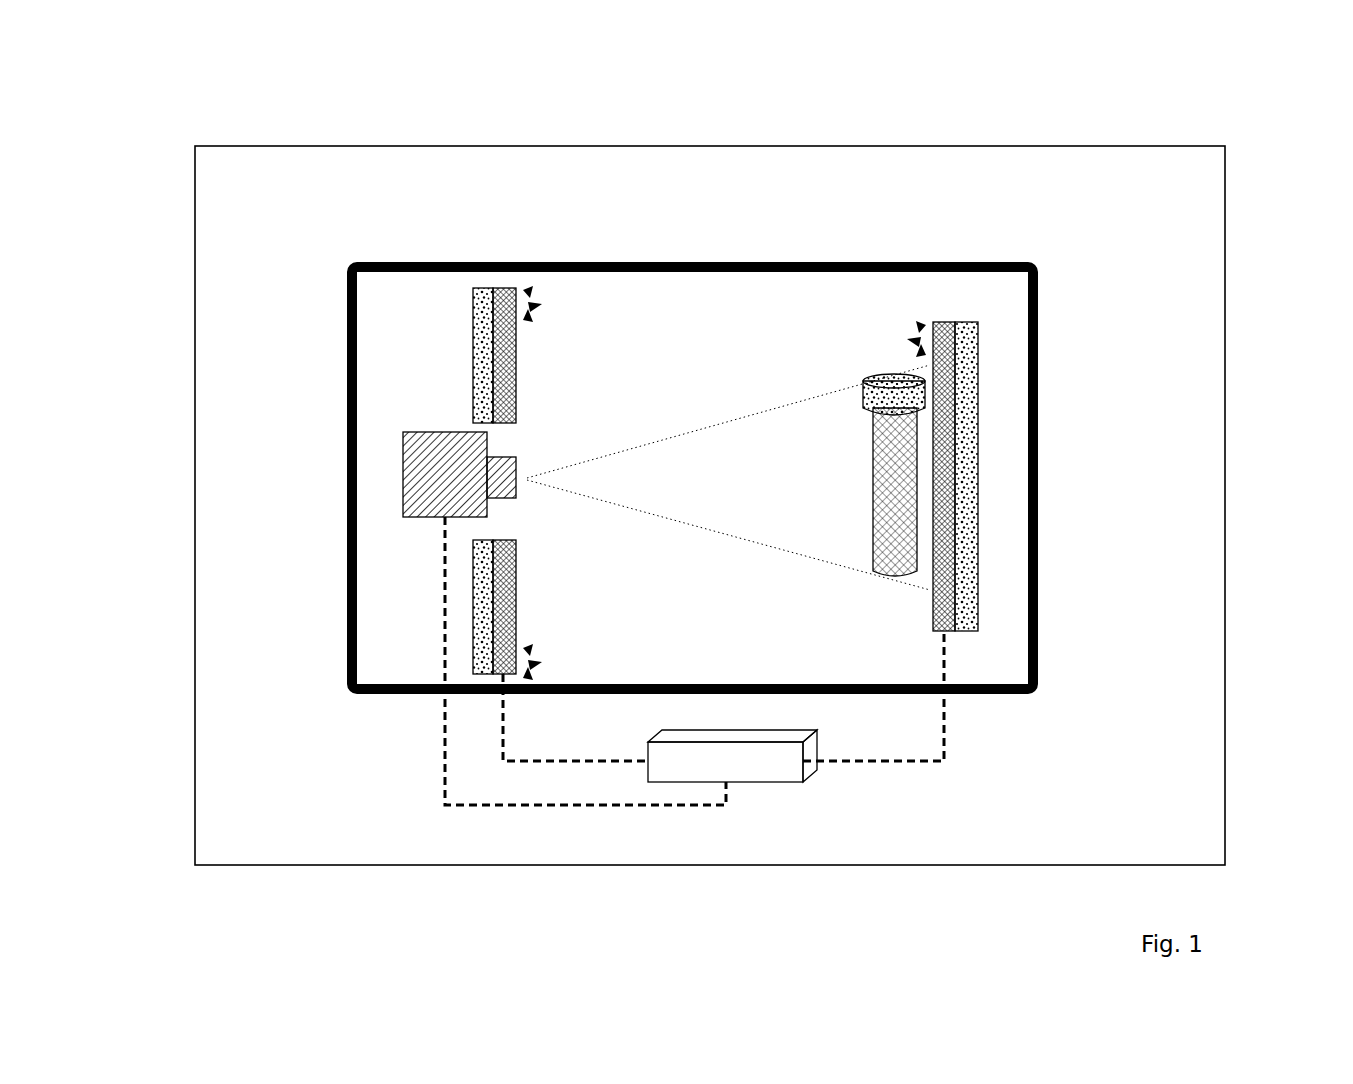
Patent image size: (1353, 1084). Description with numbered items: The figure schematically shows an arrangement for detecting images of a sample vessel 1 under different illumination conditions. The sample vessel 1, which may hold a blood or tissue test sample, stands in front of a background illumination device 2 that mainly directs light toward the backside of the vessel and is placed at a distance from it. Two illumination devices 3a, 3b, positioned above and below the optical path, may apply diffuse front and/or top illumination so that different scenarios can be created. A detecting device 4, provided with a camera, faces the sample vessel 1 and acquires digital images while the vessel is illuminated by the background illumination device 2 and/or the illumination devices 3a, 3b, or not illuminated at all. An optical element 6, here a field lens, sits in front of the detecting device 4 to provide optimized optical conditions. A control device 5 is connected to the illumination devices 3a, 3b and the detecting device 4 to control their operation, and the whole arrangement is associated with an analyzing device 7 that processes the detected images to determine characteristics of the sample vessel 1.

The sample vessel 1 is at (887, 457).
The background illumination device 2 is at (952, 490).
The illumination device 3a is at (505, 355).
The illumination device 3b is at (489, 620).
The detecting device 4 is at (392, 474).
The control device 5 is at (721, 762).
The optical element 6 is at (515, 478).
The analyzing device 7 is at (240, 181).